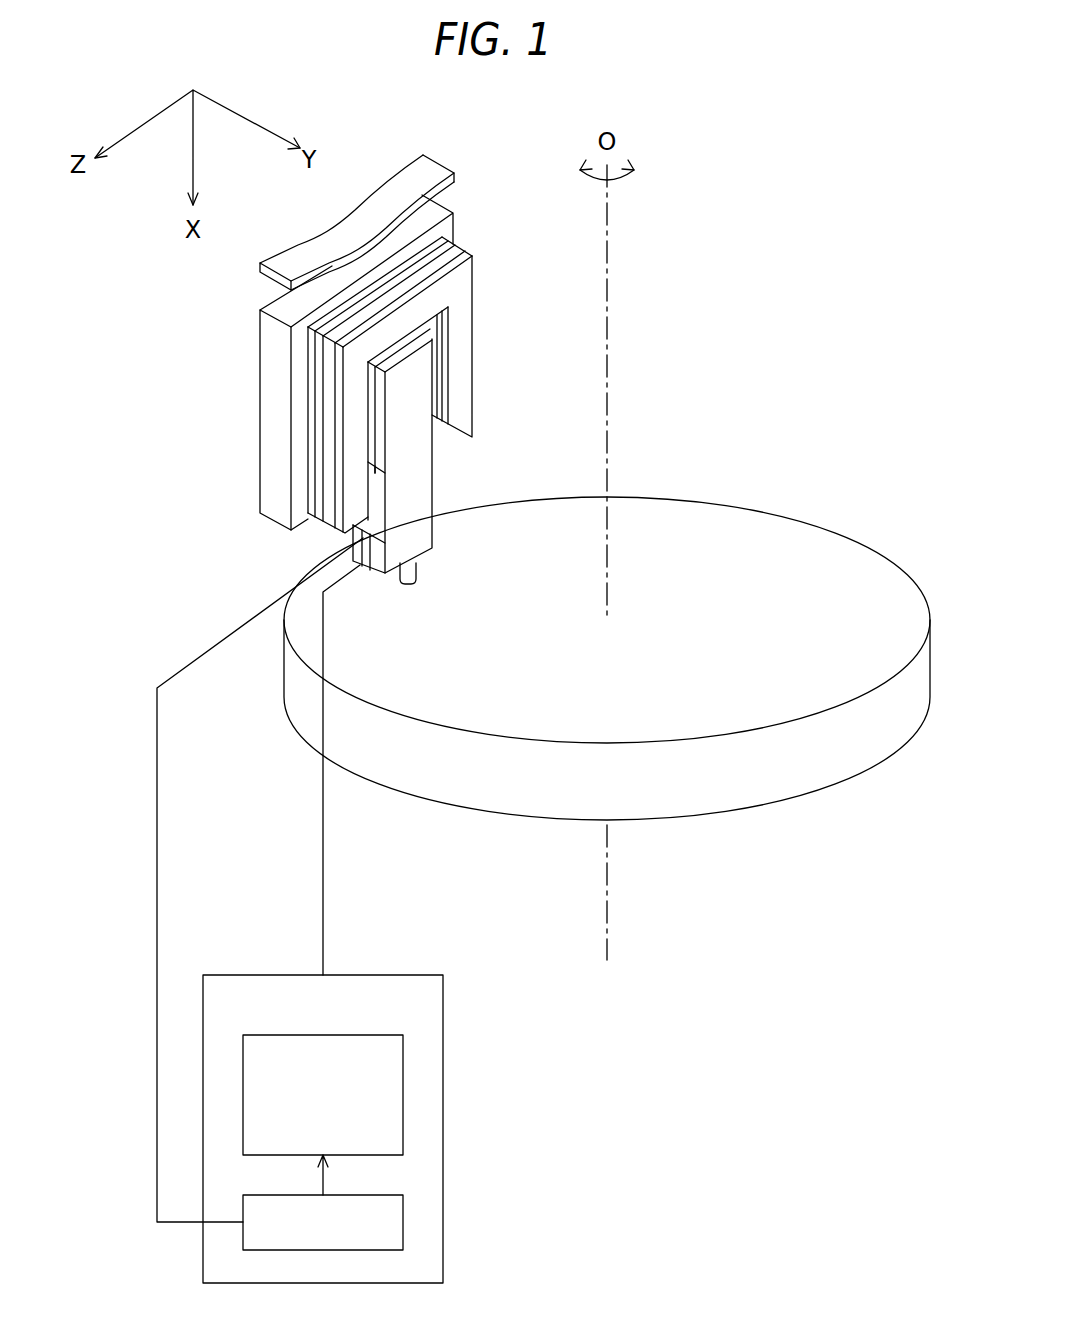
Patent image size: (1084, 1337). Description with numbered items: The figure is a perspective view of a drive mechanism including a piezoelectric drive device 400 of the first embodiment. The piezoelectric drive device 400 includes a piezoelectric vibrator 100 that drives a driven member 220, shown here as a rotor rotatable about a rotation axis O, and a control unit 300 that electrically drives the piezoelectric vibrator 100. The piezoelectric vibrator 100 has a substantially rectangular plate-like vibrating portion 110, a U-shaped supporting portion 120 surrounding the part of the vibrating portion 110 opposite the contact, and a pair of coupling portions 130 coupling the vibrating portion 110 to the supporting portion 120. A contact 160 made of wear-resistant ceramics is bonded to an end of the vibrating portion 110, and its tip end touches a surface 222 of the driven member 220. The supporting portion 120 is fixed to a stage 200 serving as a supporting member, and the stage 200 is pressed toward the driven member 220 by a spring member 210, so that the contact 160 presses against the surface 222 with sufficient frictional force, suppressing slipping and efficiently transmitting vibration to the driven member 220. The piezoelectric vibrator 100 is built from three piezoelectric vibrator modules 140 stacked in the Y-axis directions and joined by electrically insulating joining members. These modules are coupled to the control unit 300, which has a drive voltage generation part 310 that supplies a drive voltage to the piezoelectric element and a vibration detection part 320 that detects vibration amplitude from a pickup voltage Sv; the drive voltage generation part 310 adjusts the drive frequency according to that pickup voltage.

The piezoelectric vibrator 100 is at (477, 282).
The vibrating portion 110 is at (425, 502).
The supporting portion 120 is at (462, 345).
The coupling portions 130 is at (443, 433).
The piezoelectric vibrator modules 140 is at (320, 407).
The contact 160 is at (413, 585).
The stage 200 is at (278, 360).
The spring member 210 is at (402, 180).
The driven member 220 is at (817, 760).
The surface of the driven member 222 is at (532, 711).
The control unit 300 is at (410, 975).
The drive voltage generation part 310 is at (376, 1035).
The vibration detection part 320 is at (376, 1195).
The piezoelectric drive device 400 is at (185, 306).